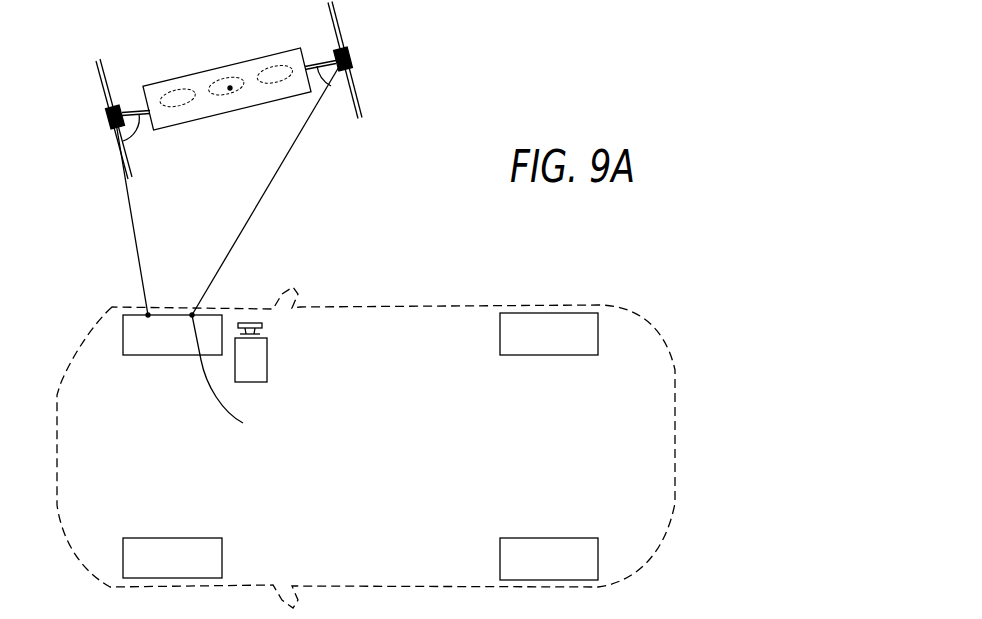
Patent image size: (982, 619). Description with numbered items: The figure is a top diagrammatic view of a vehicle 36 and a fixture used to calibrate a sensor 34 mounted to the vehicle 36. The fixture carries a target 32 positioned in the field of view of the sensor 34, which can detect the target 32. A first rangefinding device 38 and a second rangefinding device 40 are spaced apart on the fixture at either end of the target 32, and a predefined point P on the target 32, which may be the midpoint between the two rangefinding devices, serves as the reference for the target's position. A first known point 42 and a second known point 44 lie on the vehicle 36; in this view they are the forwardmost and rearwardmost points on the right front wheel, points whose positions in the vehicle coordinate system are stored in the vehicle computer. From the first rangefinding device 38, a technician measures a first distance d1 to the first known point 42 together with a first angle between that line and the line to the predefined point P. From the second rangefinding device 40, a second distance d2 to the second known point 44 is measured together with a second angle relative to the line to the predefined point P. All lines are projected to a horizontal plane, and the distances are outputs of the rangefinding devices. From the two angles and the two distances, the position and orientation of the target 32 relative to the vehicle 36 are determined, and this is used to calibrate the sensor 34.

The target 32 is at (193, 72).
The predefined point P is at (231, 86).
The first rangefinding device 38 is at (108, 116).
The second rangefinding device 40 is at (350, 55).
The vehicle 36 is at (410, 308).
The first known point 42 is at (145, 312).
The sensor 34 is at (267, 365).
The second known point 44 is at (236, 376).
The first distance d1 is at (134, 216).
The second distance d2 is at (267, 187).